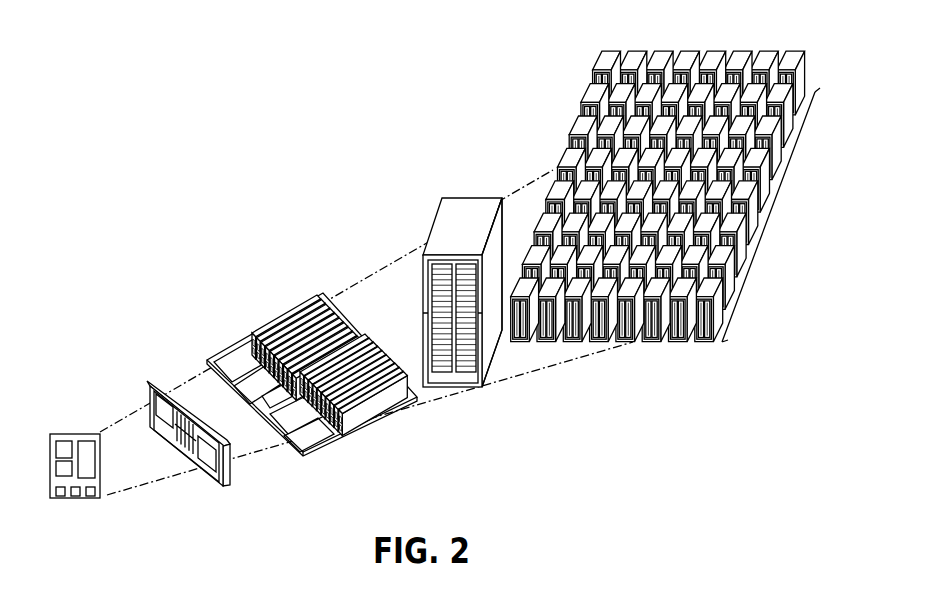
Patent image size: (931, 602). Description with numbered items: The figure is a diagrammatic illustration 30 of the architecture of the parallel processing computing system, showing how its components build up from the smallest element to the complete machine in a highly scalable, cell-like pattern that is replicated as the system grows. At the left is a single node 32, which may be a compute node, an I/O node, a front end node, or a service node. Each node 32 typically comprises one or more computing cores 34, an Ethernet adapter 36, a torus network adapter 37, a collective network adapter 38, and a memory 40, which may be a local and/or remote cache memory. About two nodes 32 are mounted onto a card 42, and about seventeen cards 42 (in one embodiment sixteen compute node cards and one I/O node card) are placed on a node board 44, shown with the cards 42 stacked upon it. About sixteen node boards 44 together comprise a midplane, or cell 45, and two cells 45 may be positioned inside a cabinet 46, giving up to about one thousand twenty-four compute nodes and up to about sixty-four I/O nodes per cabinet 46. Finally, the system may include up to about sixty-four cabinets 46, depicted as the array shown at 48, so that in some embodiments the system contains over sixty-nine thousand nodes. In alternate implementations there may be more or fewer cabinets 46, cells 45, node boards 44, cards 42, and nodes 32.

The diagrammatic illustration 30 is at (226, 200).
The node 32 is at (69, 428).
The computing cores 34 is at (55, 462).
The Ethernet adapter 36 is at (60, 492).
The torus network adapter 37 is at (75, 497).
The collective network adapter 38 is at (92, 492).
The memory 40 is at (90, 458).
The card 42 is at (273, 318).
The node board 44 is at (307, 452).
The cell 45 is at (497, 237).
The cabinet 46 is at (457, 205).
The plurality of cabinets 48 is at (747, 307).